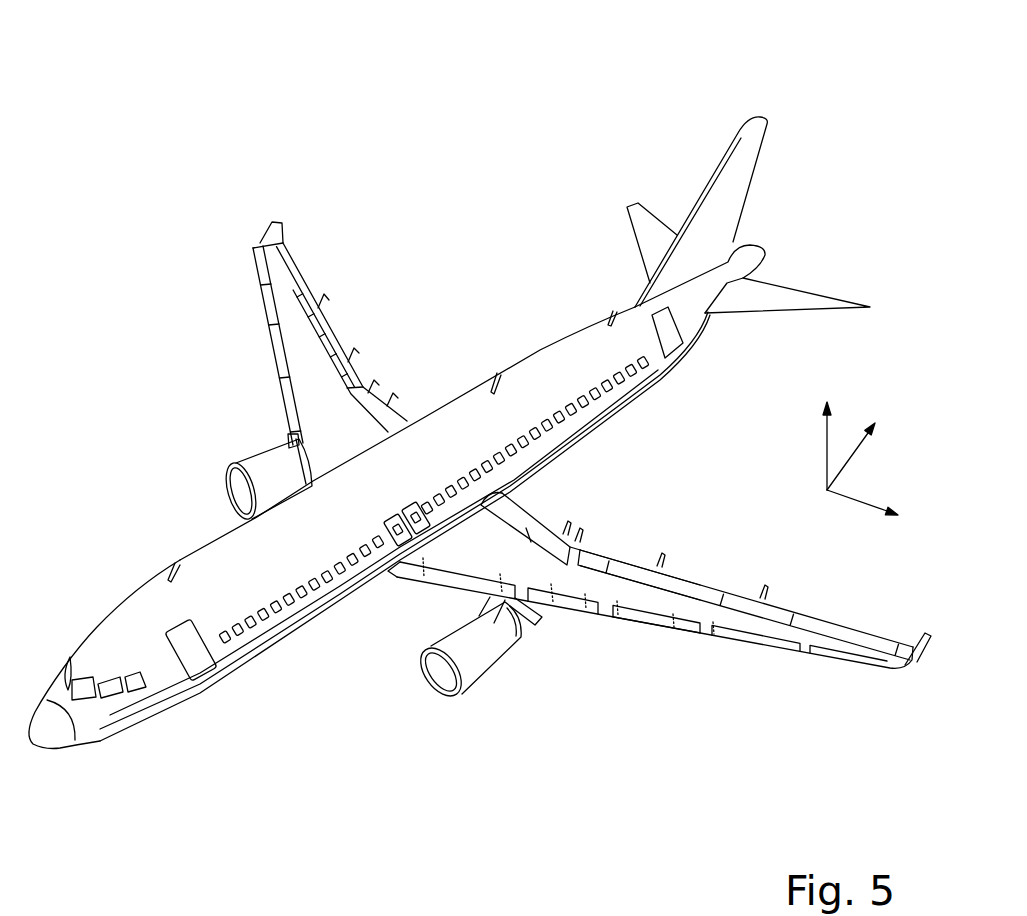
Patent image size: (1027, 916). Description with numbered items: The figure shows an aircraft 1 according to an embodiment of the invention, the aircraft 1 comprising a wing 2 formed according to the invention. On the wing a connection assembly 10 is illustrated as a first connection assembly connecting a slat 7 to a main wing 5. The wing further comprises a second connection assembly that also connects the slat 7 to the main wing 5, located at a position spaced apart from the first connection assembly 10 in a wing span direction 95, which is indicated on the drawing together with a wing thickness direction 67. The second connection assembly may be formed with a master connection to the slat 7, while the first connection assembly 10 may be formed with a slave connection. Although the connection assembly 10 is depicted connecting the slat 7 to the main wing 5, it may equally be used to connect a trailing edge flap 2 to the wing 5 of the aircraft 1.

The aircraft 1 is at (226, 98).
The wing 2 is at (362, 271).
The main wing 5 is at (603, 582).
The slat 7 is at (647, 620).
The connection assembly 10 is at (550, 625).
The wing thickness direction 67 is at (828, 438).
The wing span direction 95 is at (857, 503).